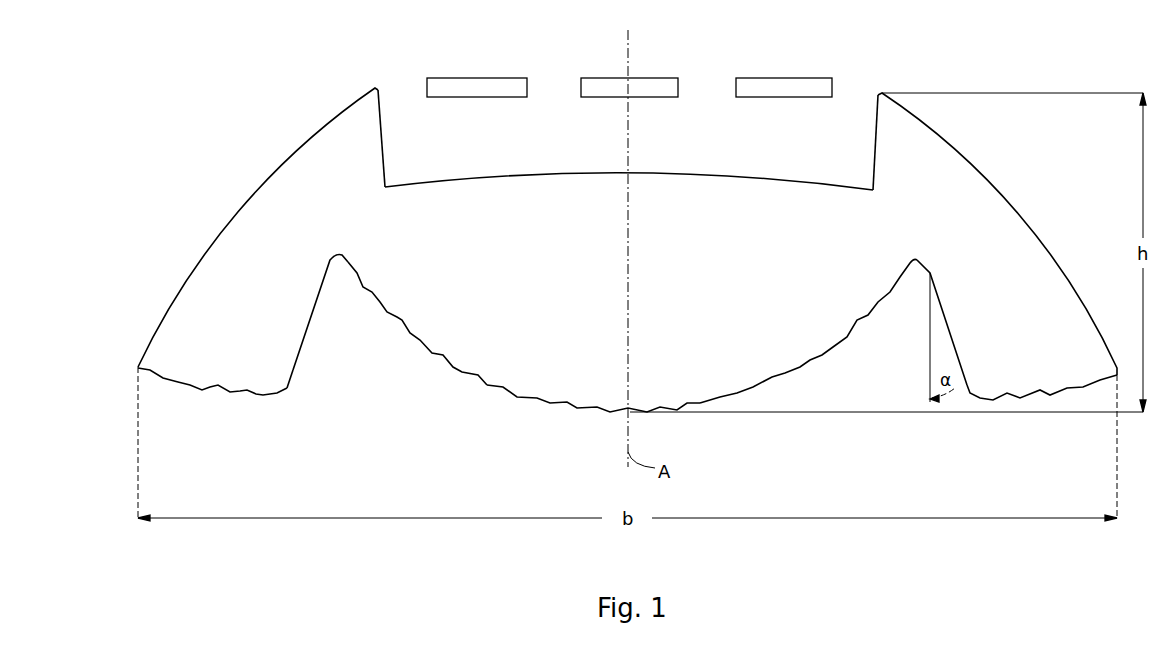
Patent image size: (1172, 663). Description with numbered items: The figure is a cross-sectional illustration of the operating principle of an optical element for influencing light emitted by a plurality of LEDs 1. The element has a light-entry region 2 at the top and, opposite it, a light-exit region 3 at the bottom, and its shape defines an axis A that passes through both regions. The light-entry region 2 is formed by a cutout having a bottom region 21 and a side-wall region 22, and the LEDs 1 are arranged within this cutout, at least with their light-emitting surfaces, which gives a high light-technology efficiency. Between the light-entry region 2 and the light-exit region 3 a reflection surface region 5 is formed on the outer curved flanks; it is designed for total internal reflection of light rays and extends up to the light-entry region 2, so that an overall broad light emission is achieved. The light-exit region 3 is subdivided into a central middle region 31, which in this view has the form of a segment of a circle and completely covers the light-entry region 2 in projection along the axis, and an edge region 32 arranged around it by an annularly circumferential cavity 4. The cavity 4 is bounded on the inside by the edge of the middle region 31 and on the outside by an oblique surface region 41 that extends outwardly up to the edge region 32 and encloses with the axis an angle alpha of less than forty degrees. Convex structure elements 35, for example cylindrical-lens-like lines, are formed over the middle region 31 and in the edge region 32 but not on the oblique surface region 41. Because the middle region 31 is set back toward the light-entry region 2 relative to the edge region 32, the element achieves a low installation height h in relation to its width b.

The LEDs 1 is at (497, 78).
The light-entry region 2 is at (386, 147).
The bottom region 21 is at (722, 178).
The side-wall region 22 is at (873, 158).
The reflection surface region 5 is at (1018, 215).
The light-exit region 3 is at (627, 355).
The middle region 31 is at (800, 375).
The edge region 32 is at (1027, 400).
The structure elements 35 is at (408, 335).
The cavity 4 is at (335, 311).
The oblique surface region 41 is at (294, 372).